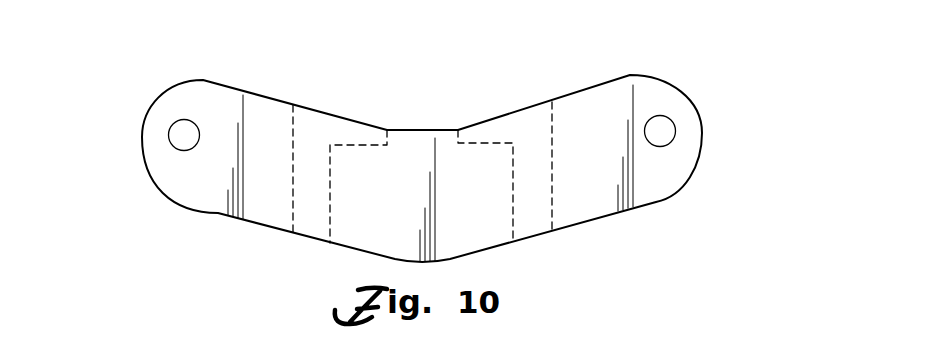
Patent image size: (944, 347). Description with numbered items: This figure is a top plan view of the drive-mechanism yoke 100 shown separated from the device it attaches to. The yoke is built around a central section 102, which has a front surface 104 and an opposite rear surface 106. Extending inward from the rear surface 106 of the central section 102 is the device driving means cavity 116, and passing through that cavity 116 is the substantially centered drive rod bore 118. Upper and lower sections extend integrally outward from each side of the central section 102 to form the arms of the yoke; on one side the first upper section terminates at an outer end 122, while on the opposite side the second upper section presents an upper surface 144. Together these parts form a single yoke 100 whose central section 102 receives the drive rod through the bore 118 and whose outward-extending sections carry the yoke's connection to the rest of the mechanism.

The drive-mechanism yoke 100 is at (668, 62).
The central section 102 is at (515, 128).
The front surface 104 is at (328, 128).
The rear surface 106 is at (548, 232).
The device driving means cavity 116 is at (380, 212).
The drive rod bore 118 is at (413, 153).
The outer end 122 is at (142, 133).
The upper surface 144 is at (702, 135).